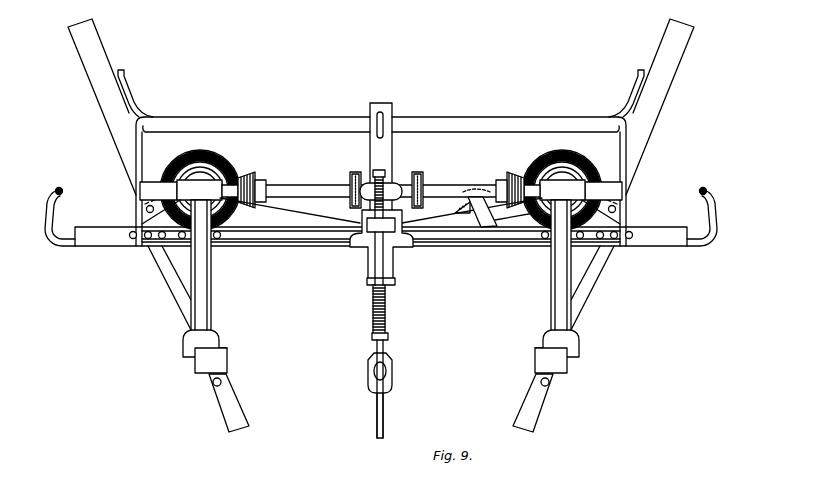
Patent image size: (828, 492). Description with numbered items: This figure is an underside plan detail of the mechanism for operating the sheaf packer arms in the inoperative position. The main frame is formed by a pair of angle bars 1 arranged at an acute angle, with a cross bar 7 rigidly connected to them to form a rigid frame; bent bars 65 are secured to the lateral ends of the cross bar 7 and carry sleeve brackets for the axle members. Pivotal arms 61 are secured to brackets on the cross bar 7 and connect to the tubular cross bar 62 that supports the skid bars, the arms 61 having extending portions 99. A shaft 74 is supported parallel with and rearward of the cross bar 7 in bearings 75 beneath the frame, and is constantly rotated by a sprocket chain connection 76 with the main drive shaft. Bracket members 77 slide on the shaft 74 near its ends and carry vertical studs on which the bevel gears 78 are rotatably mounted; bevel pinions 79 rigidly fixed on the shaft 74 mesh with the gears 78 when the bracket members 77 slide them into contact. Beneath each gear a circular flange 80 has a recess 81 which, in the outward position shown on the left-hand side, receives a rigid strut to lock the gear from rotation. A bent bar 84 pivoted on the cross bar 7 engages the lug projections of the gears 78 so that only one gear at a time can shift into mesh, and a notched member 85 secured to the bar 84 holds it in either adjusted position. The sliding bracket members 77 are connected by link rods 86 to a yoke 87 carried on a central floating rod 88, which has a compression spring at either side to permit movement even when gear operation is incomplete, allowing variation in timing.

The angle bars 1 is at (100, 48).
The extending portions 99 is at (128, 92).
The tubular cross bar 62 is at (304, 116).
The arm 61 is at (135, 193).
The bent bars 65 is at (63, 197).
The yoke 87 is at (146, 209).
The cross bar 7 is at (125, 247).
The bearings 75 is at (172, 181).
The recess 81 is at (190, 158).
The circular flange 80 is at (200, 166).
The bevel gears 78 is at (224, 160).
The bracket members 77 is at (243, 173).
The bevel pinions 79 is at (270, 178).
The shaft 74 is at (320, 189).
The sprocket chain connection 76 is at (427, 181).
The member 85 is at (500, 232).
The link rods 86 is at (277, 243).
The bent bar 84 is at (330, 225).
The central floating rod 88 is at (371, 275).